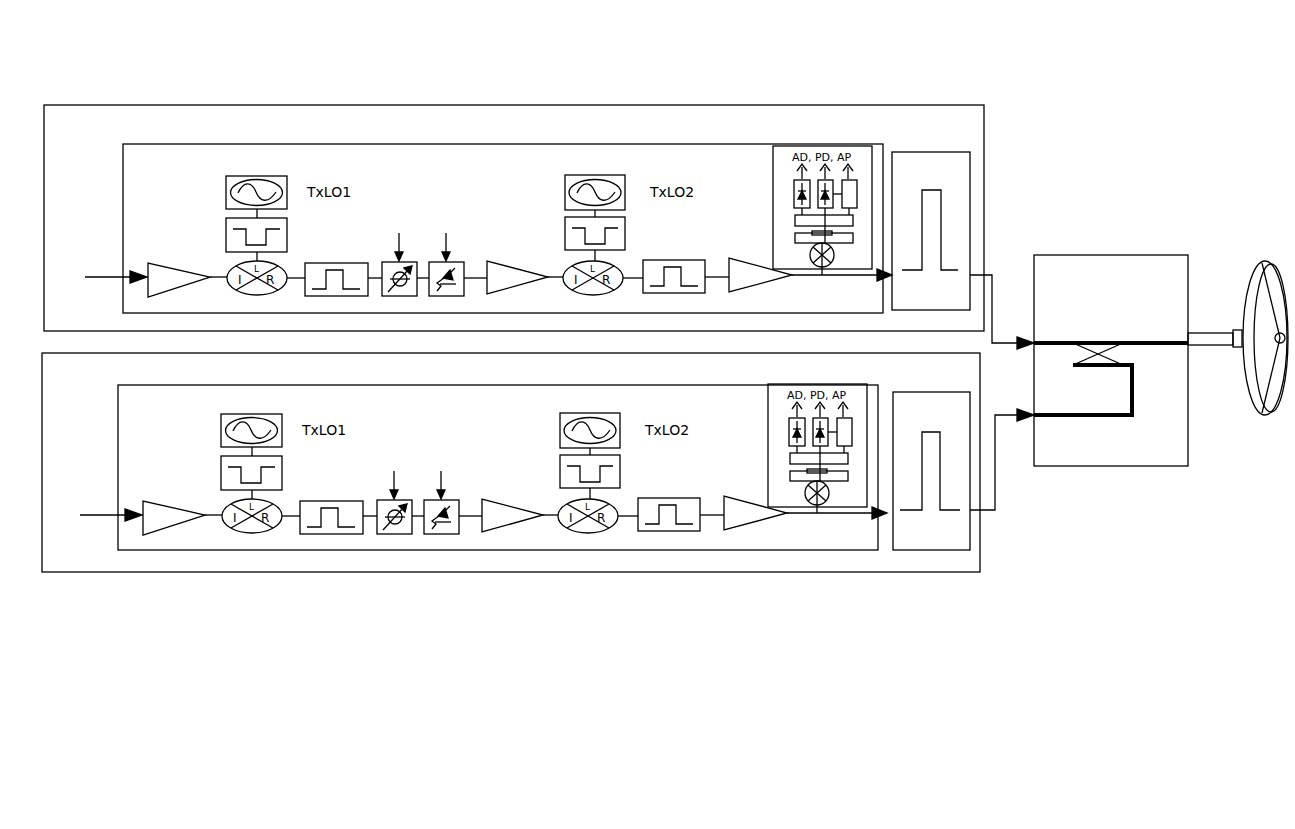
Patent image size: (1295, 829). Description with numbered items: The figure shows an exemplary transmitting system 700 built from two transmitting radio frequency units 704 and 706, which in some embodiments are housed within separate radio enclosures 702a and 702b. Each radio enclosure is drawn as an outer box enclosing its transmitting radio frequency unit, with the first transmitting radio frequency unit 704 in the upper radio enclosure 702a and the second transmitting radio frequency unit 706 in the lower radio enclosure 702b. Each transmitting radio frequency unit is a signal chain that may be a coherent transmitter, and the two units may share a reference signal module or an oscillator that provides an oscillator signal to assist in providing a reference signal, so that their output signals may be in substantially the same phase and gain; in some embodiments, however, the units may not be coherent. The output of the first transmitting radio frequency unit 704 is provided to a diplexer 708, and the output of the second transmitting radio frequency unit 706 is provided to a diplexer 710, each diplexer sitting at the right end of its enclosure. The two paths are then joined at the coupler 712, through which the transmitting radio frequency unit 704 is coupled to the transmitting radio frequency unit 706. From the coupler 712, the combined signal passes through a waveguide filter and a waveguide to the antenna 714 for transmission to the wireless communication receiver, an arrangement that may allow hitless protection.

The transmitter system 700 is at (150, 80).
The radio enclosure 702a is at (310, 105).
The radio enclosure 702b is at (297, 570).
The transmitting radio frequency unit 704 is at (503, 145).
The transmitting radio frequency unit 706 is at (447, 550).
The diplexer 708 is at (925, 152).
The diplexer 710 is at (927, 545).
The coupler 712 is at (1112, 255).
The antenna 714 is at (1263, 265).